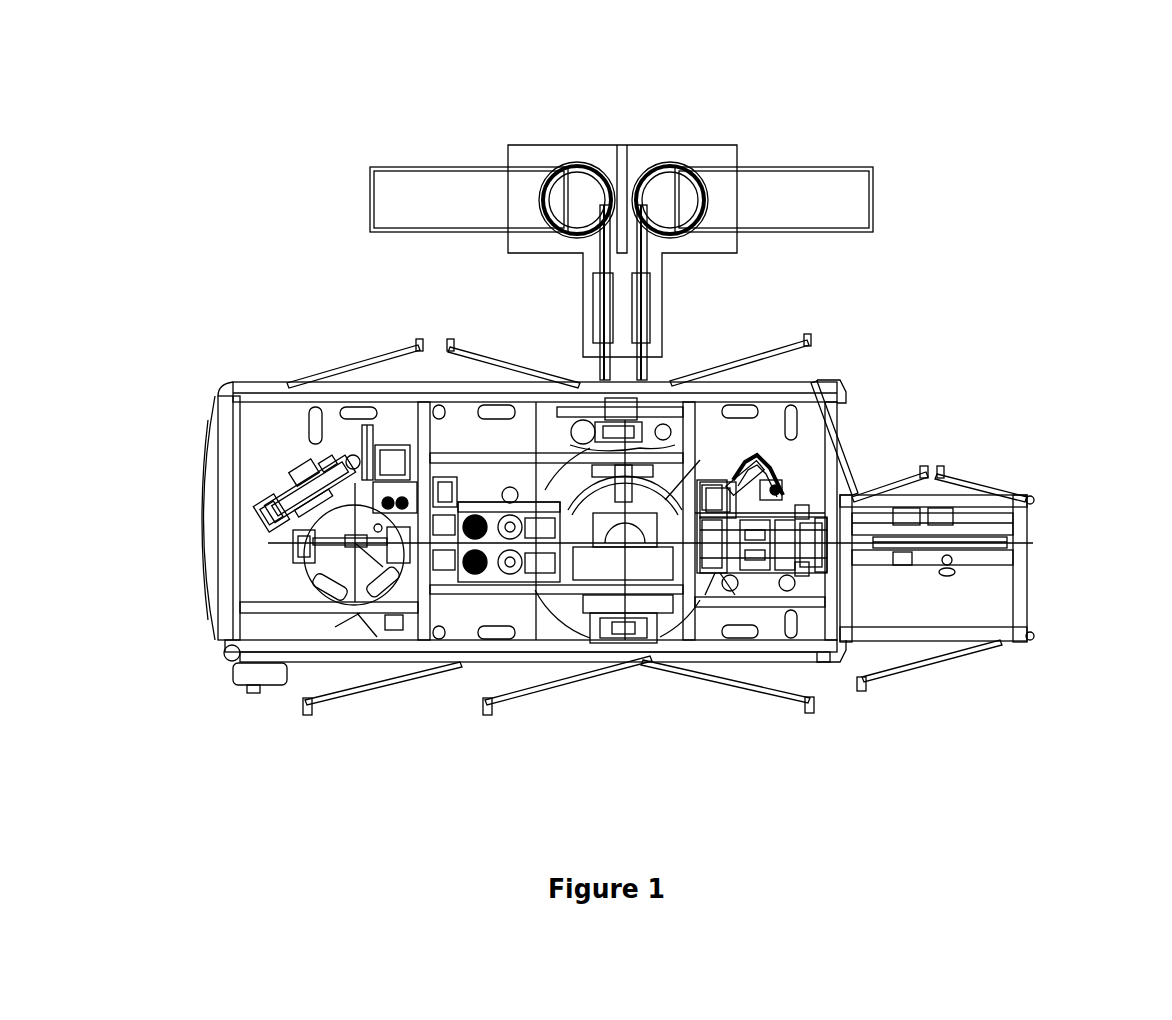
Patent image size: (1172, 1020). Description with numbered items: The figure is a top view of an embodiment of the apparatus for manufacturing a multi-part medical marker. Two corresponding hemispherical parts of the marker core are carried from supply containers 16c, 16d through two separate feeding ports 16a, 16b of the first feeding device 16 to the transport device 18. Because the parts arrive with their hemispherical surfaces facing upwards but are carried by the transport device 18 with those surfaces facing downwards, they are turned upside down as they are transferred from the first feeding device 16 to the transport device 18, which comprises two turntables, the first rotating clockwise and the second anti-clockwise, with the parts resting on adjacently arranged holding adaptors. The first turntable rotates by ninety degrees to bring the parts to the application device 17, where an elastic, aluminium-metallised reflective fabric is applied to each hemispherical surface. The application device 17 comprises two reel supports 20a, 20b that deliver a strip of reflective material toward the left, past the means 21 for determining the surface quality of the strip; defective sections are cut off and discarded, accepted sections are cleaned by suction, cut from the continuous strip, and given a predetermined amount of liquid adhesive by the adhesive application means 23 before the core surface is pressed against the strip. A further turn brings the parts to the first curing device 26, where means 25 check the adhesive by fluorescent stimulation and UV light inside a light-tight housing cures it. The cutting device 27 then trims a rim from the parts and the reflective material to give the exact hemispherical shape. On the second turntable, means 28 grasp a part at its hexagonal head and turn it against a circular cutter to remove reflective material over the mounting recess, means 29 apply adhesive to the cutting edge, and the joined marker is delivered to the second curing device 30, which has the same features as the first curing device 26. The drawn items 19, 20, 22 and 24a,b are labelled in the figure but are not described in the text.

The first feeding device 16 is at (621, 217).
The feeding port 16a is at (642, 287).
The feeding port 16b is at (603, 305).
The supply container 16c is at (492, 200).
The supply container 16d is at (752, 200).
The application device 17 is at (713, 560).
The transport device 18 is at (433, 597).
The inclined processing station 19 is at (293, 490).
The extension frame 20 is at (988, 581).
The reel support 20a is at (1003, 543).
The reel support 20b is at (960, 563).
The means for determining surface quality 21 is at (825, 552).
The clamp jaws 22 is at (805, 570).
The adhesive application means 23 is at (772, 483).
The gripper fingers 24a,b is at (723, 498).
The means for determining adhesive application quality 25 is at (635, 576).
The first curing device 26 is at (623, 633).
The cutting device 27 is at (493, 582).
The means for removing reflective material 28 is at (368, 478).
The adhesive applying means 29 is at (351, 458).
The second curing device 30 is at (297, 560).